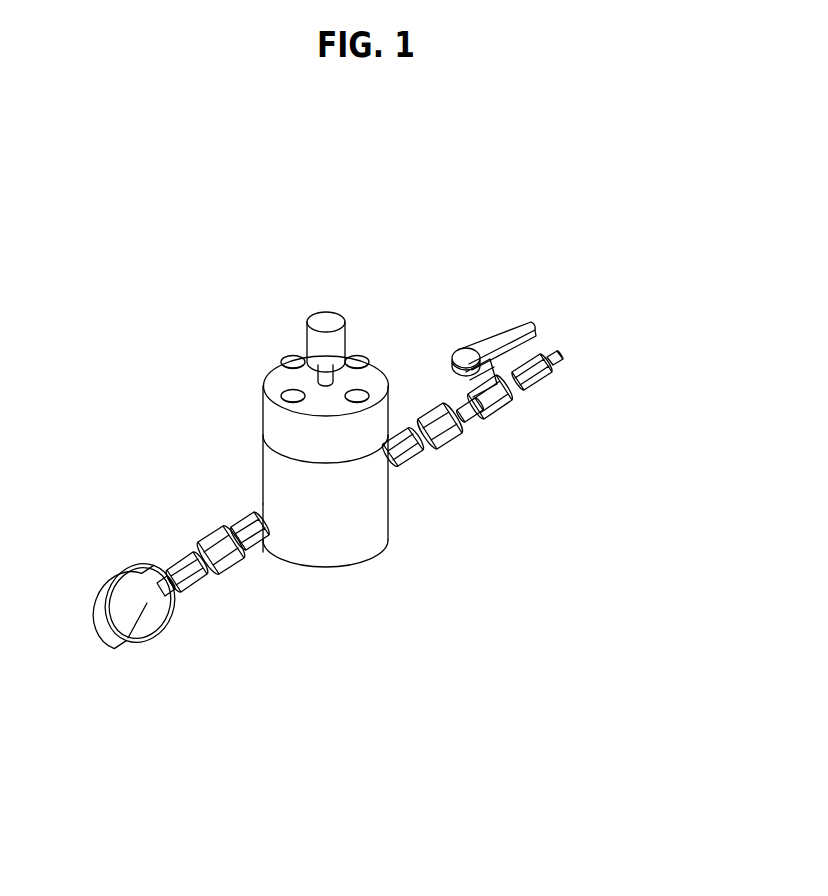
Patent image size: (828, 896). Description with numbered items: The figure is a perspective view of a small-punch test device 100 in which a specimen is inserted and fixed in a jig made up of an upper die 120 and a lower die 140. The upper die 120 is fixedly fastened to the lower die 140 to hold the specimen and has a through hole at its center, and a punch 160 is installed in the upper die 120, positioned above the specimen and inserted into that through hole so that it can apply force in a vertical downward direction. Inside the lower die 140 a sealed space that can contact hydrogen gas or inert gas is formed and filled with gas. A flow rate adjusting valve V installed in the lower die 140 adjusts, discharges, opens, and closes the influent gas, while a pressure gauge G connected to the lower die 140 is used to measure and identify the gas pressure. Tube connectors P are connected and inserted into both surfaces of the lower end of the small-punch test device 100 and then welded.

The small-punch test device 100 is at (383, 352).
The upper die 120 is at (290, 430).
The lower die 140 is at (345, 525).
The punch 160 is at (327, 327).
The pressure gauge G is at (133, 640).
The flow rate adjusting valve V is at (523, 391).
The tube connector P is at (550, 357).